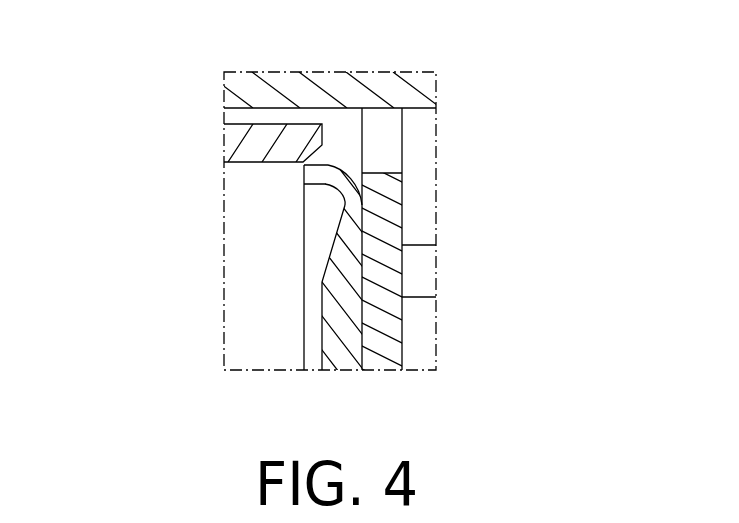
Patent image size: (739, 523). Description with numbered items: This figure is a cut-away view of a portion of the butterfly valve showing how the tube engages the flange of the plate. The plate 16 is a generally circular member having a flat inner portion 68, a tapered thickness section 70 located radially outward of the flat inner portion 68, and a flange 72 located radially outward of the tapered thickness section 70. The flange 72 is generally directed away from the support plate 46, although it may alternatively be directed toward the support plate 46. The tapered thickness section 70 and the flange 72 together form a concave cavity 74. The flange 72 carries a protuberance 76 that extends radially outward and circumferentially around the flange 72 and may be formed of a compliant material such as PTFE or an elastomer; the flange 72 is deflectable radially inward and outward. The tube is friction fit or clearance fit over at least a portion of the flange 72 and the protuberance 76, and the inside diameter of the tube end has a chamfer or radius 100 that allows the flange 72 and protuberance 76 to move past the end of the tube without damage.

The plate 16 is at (350, 146).
The support plate 46 is at (420, 199).
The protuberance 76 is at (318, 163).
The chamfer or radius 100 is at (322, 146).
The tapered thickness section 70 is at (342, 234).
The flange 72 is at (325, 171).
The concave cavity 74 is at (314, 212).
The flat inner portion 68 is at (295, 330).